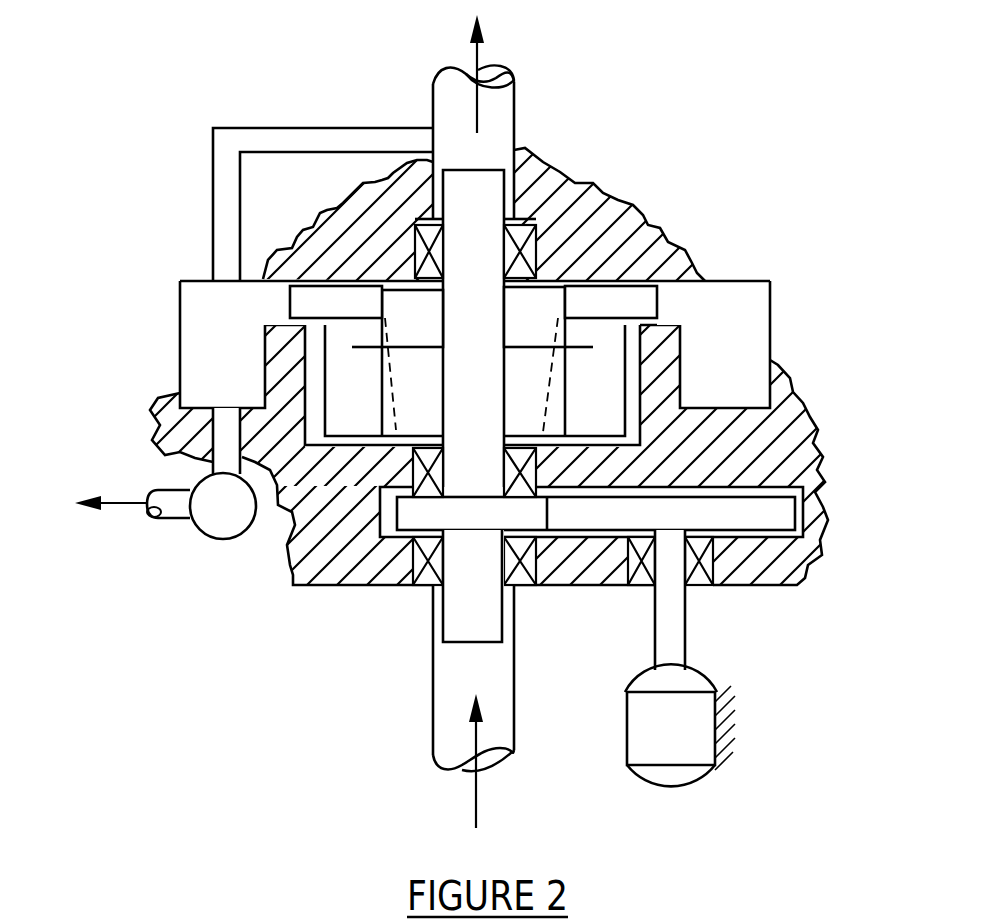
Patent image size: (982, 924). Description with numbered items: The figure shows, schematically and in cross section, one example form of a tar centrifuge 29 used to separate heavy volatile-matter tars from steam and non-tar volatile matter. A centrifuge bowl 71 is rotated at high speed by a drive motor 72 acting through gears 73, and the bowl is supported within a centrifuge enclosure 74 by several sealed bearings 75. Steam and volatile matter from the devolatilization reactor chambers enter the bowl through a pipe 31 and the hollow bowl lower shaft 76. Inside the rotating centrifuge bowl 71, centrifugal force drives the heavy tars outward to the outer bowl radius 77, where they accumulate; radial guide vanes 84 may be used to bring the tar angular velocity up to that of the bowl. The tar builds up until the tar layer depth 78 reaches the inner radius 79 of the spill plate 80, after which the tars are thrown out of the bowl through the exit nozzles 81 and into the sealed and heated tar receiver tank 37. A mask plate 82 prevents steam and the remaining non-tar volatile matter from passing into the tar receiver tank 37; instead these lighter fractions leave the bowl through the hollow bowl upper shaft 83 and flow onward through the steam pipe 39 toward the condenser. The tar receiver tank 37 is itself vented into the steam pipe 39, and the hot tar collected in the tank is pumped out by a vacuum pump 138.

The tar centrifuge 29 is at (315, 565).
The pipe 31 is at (433, 724).
The tar receiver tank 37 is at (193, 315).
The steam pipe 39 is at (517, 117).
The centrifuge bowl 71 is at (455, 423).
The drive motor 72 is at (683, 742).
The gears 73 is at (767, 517).
The centrifuge enclosure 74 is at (388, 490).
The sealed bearings 75 is at (528, 248).
The hollow bowl lower shaft 76 is at (450, 612).
The outer bowl radius 77 is at (323, 403).
The tar layer depth 78 is at (397, 415).
The inner radius 79 is at (377, 310).
The spill plate 80 is at (640, 307).
The exit nozzles 81 is at (322, 302).
The mask plate 82 is at (643, 205).
The hollow bowl upper shaft 83 is at (483, 210).
The radial guide vanes 84 is at (603, 420).
The vacuum pump 138 is at (207, 528).